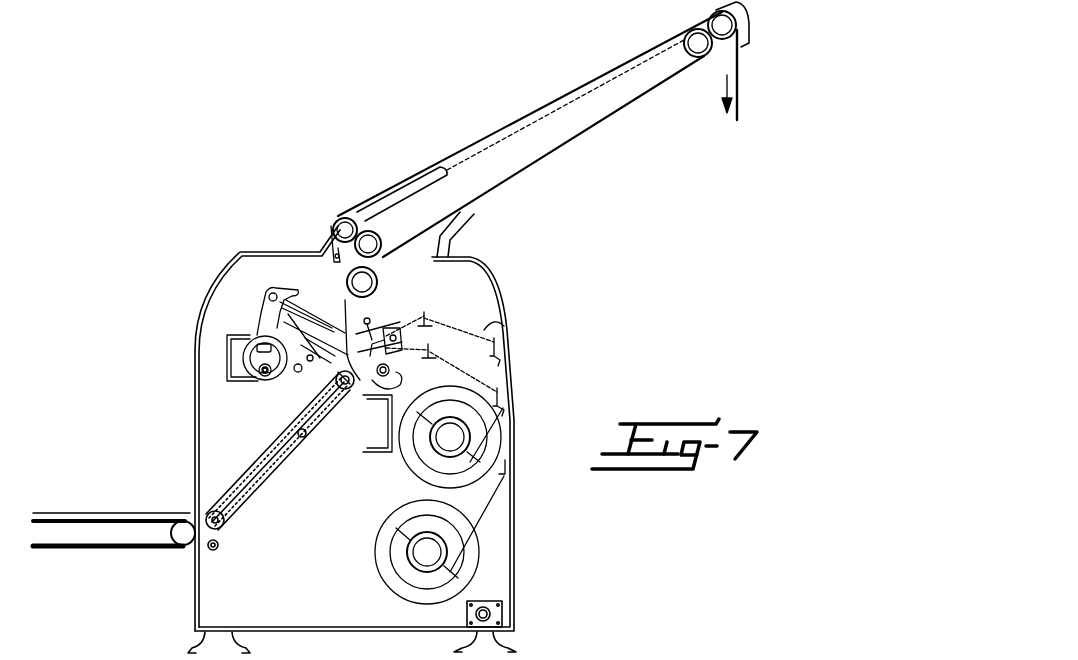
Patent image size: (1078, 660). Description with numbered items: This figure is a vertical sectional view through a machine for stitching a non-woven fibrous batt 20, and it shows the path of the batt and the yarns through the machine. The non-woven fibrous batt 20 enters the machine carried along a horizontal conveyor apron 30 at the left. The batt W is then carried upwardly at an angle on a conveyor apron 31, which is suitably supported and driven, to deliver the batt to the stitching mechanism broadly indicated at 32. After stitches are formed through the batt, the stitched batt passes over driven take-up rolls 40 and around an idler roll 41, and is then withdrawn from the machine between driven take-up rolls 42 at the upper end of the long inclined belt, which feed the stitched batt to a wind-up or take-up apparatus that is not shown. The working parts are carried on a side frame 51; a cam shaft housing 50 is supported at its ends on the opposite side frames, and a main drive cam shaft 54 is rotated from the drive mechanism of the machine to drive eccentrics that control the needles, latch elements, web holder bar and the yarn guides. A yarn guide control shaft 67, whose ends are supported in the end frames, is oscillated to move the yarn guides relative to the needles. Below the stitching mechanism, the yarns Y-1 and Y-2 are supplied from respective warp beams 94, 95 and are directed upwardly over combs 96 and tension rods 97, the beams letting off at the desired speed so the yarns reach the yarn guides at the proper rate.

The non-woven fibrous batt 20 is at (572, 118).
The horizontal conveyor apron 30 is at (148, 546).
The conveyor apron 31 is at (303, 436).
The stitching mechanism 32 is at (368, 312).
The driven take-up rolls 40 is at (377, 276).
The idler roll 41 is at (341, 220).
The driven take-up rolls 42 is at (708, 30).
The cam shaft housing 50 is at (240, 342).
The side frame 51 is at (298, 528).
The main drive cam shaft 54 is at (260, 388).
The yarn guide control shaft 67 is at (392, 374).
The warp beam 94 is at (382, 554).
The warp beam 95 is at (418, 468).
The combs 96 is at (433, 353).
The tension rods 97 is at (504, 348).
The batt W is at (252, 466).
The yarn Y-1 is at (484, 330).
The yarn Y-2 is at (492, 382).